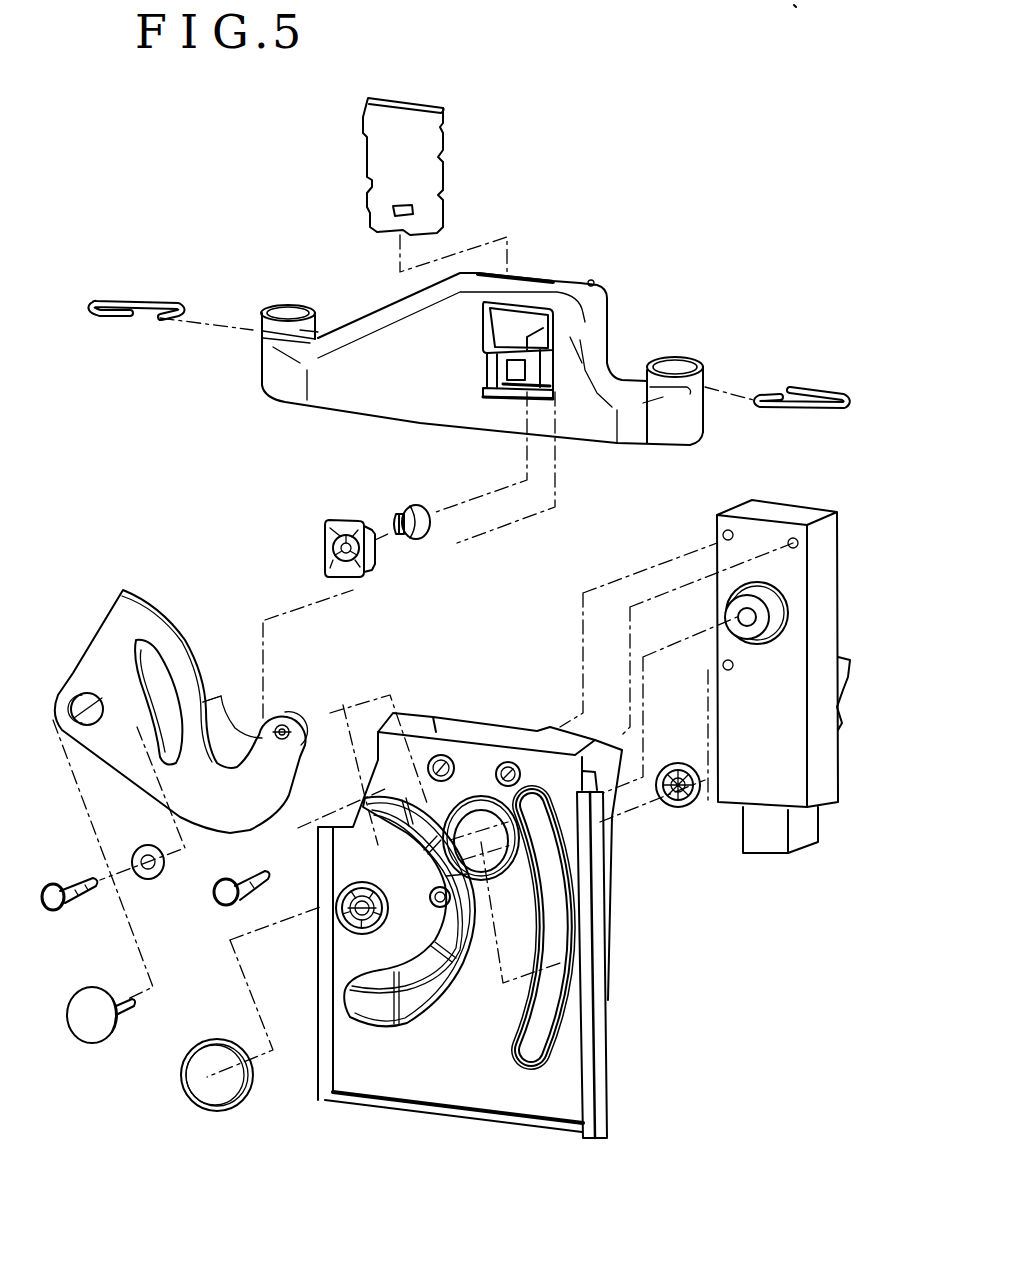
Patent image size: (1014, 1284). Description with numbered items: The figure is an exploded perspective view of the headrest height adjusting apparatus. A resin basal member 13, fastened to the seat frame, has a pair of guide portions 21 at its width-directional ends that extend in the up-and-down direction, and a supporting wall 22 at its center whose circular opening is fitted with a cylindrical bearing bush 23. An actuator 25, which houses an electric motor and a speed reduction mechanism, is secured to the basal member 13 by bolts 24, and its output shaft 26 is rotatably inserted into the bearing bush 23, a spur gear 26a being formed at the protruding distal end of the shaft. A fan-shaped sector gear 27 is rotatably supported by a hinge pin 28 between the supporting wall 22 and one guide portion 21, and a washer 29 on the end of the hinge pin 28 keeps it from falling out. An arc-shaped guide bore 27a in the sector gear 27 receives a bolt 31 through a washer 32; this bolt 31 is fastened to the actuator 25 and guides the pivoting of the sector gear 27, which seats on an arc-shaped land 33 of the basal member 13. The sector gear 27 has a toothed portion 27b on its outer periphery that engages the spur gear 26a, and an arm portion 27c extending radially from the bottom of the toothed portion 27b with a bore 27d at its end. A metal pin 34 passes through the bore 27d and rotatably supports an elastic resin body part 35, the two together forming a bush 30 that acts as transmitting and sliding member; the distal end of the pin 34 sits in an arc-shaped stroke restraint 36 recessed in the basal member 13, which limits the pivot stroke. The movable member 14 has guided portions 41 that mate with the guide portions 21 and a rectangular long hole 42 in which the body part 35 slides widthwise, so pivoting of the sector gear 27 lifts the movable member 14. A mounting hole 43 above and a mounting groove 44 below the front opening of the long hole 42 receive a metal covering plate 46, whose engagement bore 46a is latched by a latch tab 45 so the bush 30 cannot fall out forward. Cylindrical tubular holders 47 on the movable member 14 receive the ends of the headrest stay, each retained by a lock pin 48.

The basal member 13 is at (474, 925).
The movable member 14 is at (479, 338).
The guide portions 21 is at (320, 960).
The supporting wall 22 is at (502, 884).
The bearing bush 23 is at (250, 1083).
The bolts 24 is at (250, 874).
The actuator 25 is at (783, 653).
The output shaft 26 is at (777, 590).
The spur gear 26a is at (777, 647).
The sector gear 27 is at (100, 657).
The guide bore 27a is at (157, 657).
The toothed portion 27b is at (153, 598).
The arm portion 27c is at (226, 697).
The bore 27d is at (300, 744).
The hinge pin 28 is at (78, 998).
The washer 29 is at (687, 806).
The bush 30 is at (401, 569).
The bolt 31 is at (78, 878).
The washer 32 is at (140, 848).
The land 33 is at (433, 1000).
The pin 34 is at (425, 540).
The body part 35 is at (353, 580).
The stroke restraint 36 is at (550, 987).
The guided portions 41 is at (320, 332).
The long hole 42 is at (555, 358).
The mounting hole 43 is at (527, 273).
The mounting groove 44 is at (503, 390).
The latch tab 45 is at (518, 395).
The covering plate 46 is at (430, 162).
The engagement bore 46a is at (410, 214).
The holders 47 is at (262, 362).
The lock pin 48 is at (140, 300).